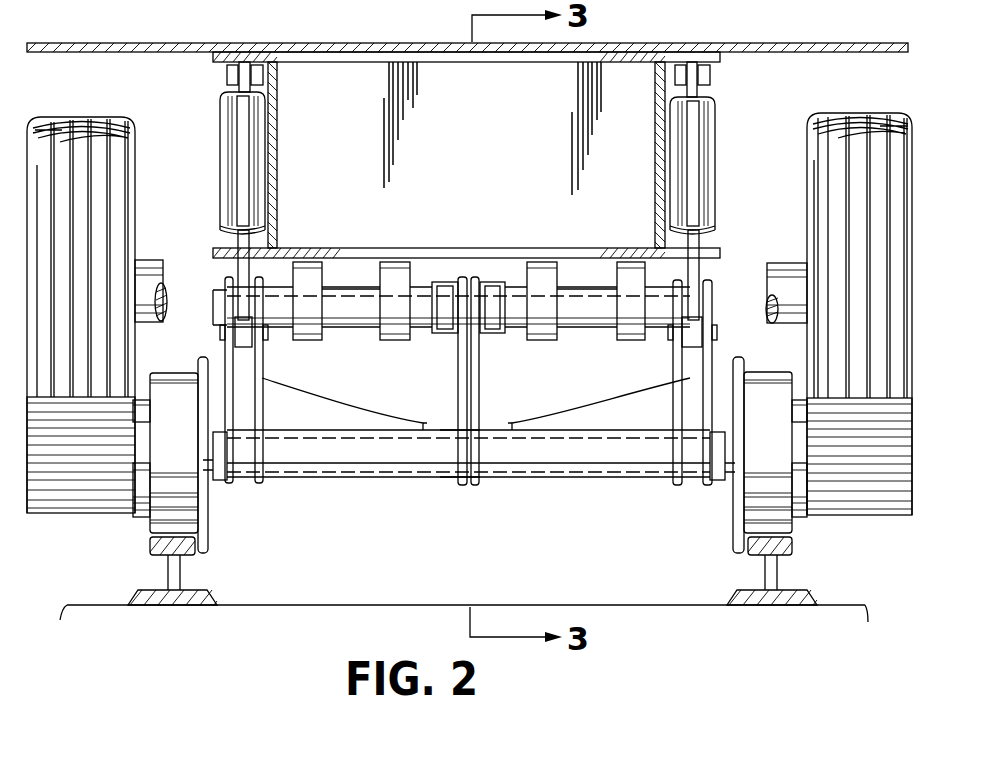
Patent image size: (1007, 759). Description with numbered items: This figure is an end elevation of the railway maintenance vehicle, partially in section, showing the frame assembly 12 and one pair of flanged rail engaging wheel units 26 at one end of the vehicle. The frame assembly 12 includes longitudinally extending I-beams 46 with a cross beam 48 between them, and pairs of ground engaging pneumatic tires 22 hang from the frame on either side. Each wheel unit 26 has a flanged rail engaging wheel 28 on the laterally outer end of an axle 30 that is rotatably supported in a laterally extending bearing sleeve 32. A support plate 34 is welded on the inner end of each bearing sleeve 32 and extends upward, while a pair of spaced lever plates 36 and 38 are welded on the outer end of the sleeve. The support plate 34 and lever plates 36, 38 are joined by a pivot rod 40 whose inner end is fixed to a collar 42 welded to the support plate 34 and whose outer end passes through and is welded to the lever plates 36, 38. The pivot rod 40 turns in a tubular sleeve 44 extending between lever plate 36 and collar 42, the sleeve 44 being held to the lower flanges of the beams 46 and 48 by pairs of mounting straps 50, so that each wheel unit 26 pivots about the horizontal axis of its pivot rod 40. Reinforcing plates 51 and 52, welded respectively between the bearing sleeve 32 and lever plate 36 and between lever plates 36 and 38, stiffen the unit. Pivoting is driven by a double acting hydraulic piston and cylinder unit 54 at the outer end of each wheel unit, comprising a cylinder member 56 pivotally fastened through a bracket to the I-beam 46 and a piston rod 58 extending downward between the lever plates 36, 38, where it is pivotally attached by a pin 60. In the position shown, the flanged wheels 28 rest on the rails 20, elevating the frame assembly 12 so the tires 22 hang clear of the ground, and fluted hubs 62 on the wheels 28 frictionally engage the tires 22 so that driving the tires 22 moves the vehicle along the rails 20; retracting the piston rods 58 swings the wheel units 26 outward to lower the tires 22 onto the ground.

The frame assembly 12 is at (684, 40).
The railway rails 20 is at (203, 588).
The ground engaging pneumatic tires 22 is at (120, 130).
The flanged rail engaging wheel unit 26 is at (488, 483).
The flanged rail engaging wheel 28 is at (203, 508).
The axle 30 is at (212, 447).
The bearing sleeve 32 is at (378, 482).
The support plate 34 is at (458, 354).
The lever plate 36 is at (262, 351).
The lever plate 38 is at (226, 350).
The pivot rod 40 is at (350, 298).
The collar 42 is at (487, 283).
The tubular sleeve 44 is at (352, 325).
The I-beam 46 is at (272, 172).
The cross beam 48 is at (351, 72).
The mounting strap 50 is at (312, 262).
The reinforcing plate 51 is at (338, 416).
The reinforcing plate 52 is at (240, 376).
The double acting hydraulic piston and cylinder unit 54 is at (236, 122).
The cylinder member 56 is at (238, 160).
The piston rod 58 is at (240, 242).
The pin 60 is at (222, 330).
The hub 62 is at (83, 495).